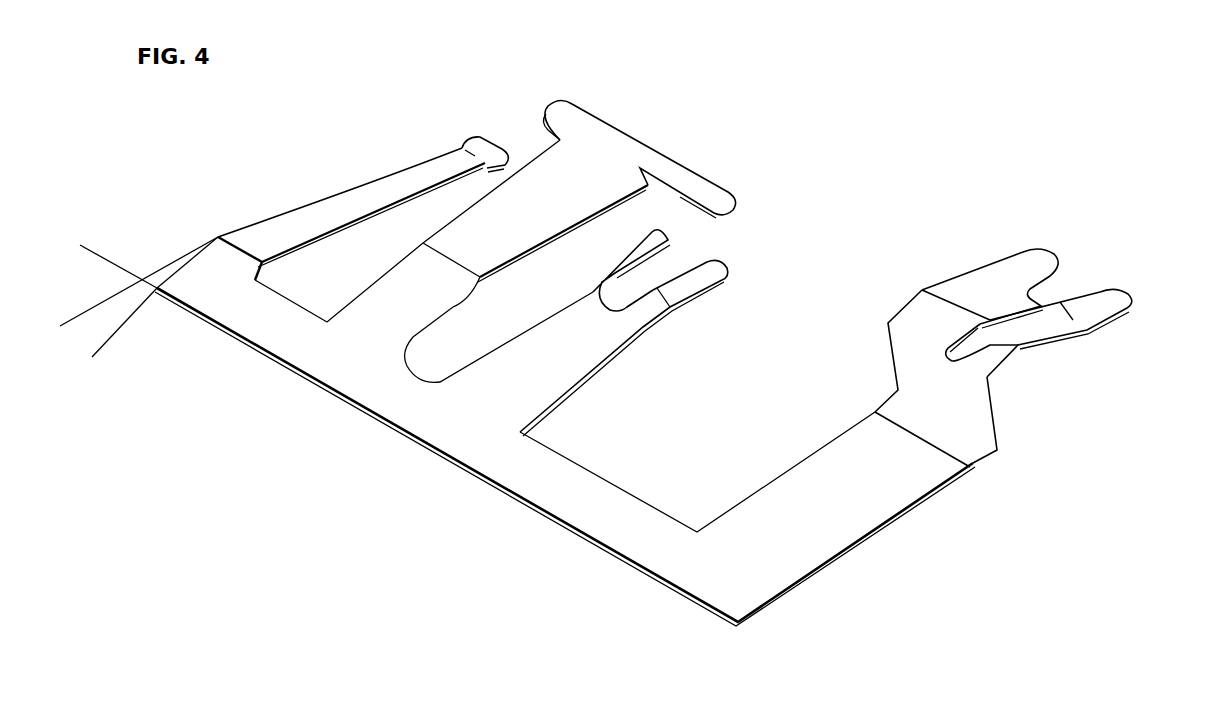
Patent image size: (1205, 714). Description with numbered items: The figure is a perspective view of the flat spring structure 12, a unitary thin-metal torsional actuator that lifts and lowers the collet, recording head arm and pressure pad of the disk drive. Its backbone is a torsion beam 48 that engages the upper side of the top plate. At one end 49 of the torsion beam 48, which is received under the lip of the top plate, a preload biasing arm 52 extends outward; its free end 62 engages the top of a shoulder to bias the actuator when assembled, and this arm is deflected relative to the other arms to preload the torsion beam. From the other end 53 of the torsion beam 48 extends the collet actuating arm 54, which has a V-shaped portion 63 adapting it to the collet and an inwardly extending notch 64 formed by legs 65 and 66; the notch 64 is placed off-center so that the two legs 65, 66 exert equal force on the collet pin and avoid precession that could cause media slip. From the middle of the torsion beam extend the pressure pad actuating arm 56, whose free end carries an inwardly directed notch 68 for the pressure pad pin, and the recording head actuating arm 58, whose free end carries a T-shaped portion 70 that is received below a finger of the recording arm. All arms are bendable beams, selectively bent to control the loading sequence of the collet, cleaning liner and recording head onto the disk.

The flat spring structure 12 is at (480, 463).
The torsion beam 48 is at (350, 393).
The one end of torsion beam 49 is at (142, 285).
The preload biasing arm 52 is at (305, 213).
The other end of torsion beam 53 is at (727, 618).
The collet actuating arm 54 is at (867, 428).
The pressure pad actuating arm 56 is at (607, 342).
The recording head actuating arm 58 is at (490, 263).
The free end of preload biasing arm 62 is at (462, 150).
The V-shaped portion 63 is at (970, 414).
The notch 64 is at (997, 325).
The leg 65 is at (1015, 290).
The leg 66 is at (1028, 333).
The inwardly directed notch 68 is at (622, 290).
The T-shaped portion 70 is at (700, 186).